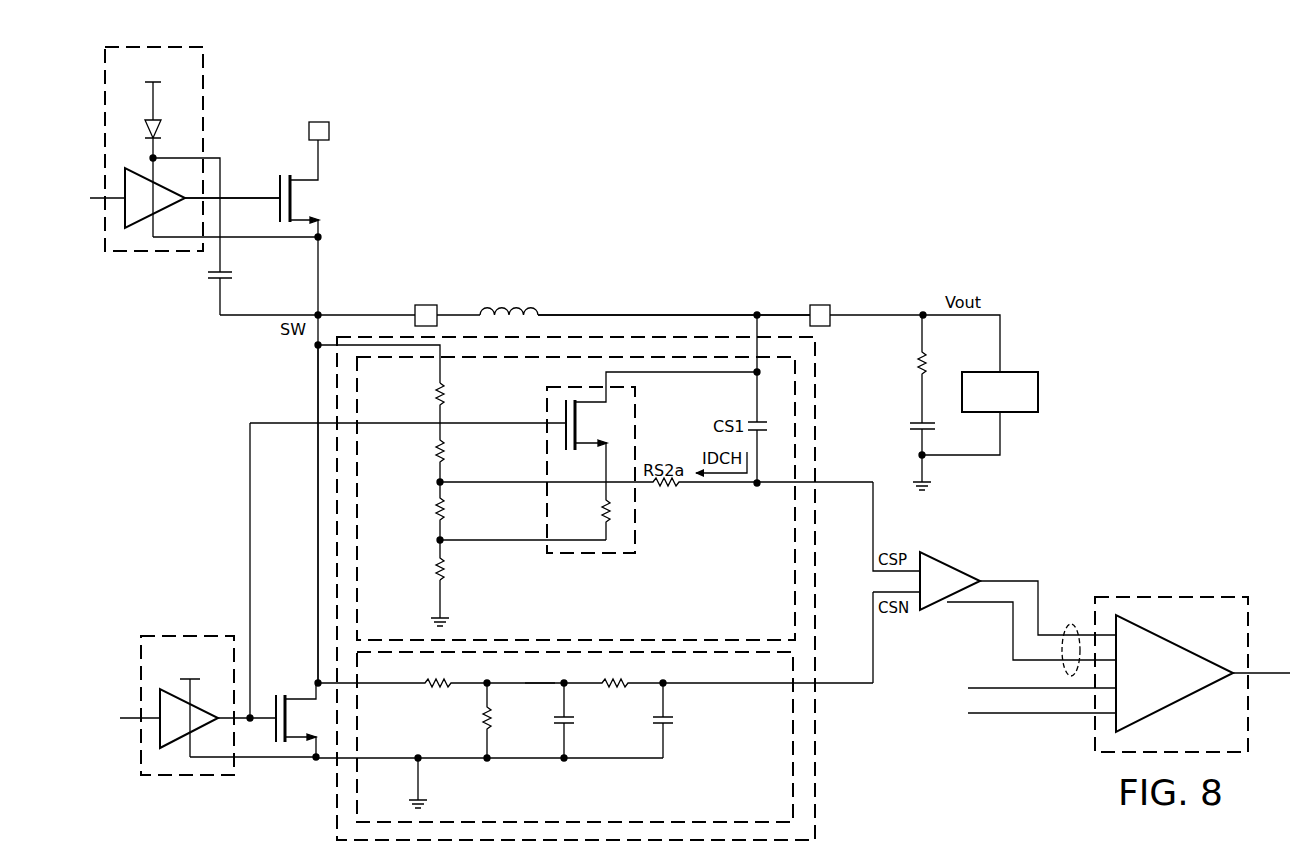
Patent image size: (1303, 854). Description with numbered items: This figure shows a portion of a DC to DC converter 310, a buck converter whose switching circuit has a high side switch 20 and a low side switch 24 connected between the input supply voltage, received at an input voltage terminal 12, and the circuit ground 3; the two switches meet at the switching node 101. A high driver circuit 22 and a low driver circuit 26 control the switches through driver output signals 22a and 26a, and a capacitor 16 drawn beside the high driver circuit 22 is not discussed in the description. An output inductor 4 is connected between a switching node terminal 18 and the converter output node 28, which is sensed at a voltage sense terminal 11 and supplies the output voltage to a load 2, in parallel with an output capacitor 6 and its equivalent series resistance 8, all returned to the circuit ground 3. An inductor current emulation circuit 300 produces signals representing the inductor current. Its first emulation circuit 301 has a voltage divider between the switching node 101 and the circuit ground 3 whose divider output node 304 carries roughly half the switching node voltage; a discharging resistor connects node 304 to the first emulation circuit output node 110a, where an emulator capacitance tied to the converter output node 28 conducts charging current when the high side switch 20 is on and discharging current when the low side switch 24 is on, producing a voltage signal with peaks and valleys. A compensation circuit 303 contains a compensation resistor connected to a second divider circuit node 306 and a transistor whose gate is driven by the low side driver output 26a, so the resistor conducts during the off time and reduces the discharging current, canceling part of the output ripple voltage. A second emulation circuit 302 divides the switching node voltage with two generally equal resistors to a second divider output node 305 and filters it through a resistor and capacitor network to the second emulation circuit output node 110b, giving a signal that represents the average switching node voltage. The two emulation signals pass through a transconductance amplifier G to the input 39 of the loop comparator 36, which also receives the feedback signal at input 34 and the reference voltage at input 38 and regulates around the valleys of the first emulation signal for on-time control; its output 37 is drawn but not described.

The DC to DC converter 310 is at (804, 154).
The high driver circuit 22 is at (100, 125).
The high side driver output signal 22a is at (262, 196).
The high side switch 20 is at (277, 212).
The input voltage terminal 12 is at (309, 131).
The bootstrap capacitor 16 is at (208, 276).
The switching node terminal 18 is at (425, 305).
The output inductor 4 is at (497, 300).
The converter output node 28 is at (673, 314).
The voltage sense terminal 11 is at (820, 305).
The equivalent series resistance 8 is at (930, 360).
The output capacitor 6 is at (936, 428).
The load 2 is at (1040, 394).
The circuit ground 3 is at (933, 486).
The inductor current emulation circuit 300 is at (818, 405).
The switching node 101 is at (318, 392).
The first emulation circuit 301 is at (752, 572).
The divider output node 304 is at (432, 482).
The second divider circuit node 306 is at (432, 540).
The compensation circuit 303 is at (604, 557).
The first emulation circuit output node 110a is at (875, 522).
The second emulation circuit output node 110b is at (874, 628).
The transconductance amplifier G is at (933, 552).
The loop comparator input 39 is at (1068, 624).
The feedback input 34 is at (998, 687).
The reference voltage input 38 is at (952, 714).
The loop comparator 36 is at (1196, 597).
The output of error amplifier 37 is at (1270, 675).
The second emulation circuit 302 is at (748, 792).
The second divider output node 305 is at (537, 684).
The low driver circuit 26 is at (140, 731).
The low side driver output signal 26a is at (250, 568).
The low side switch 24 is at (274, 705).